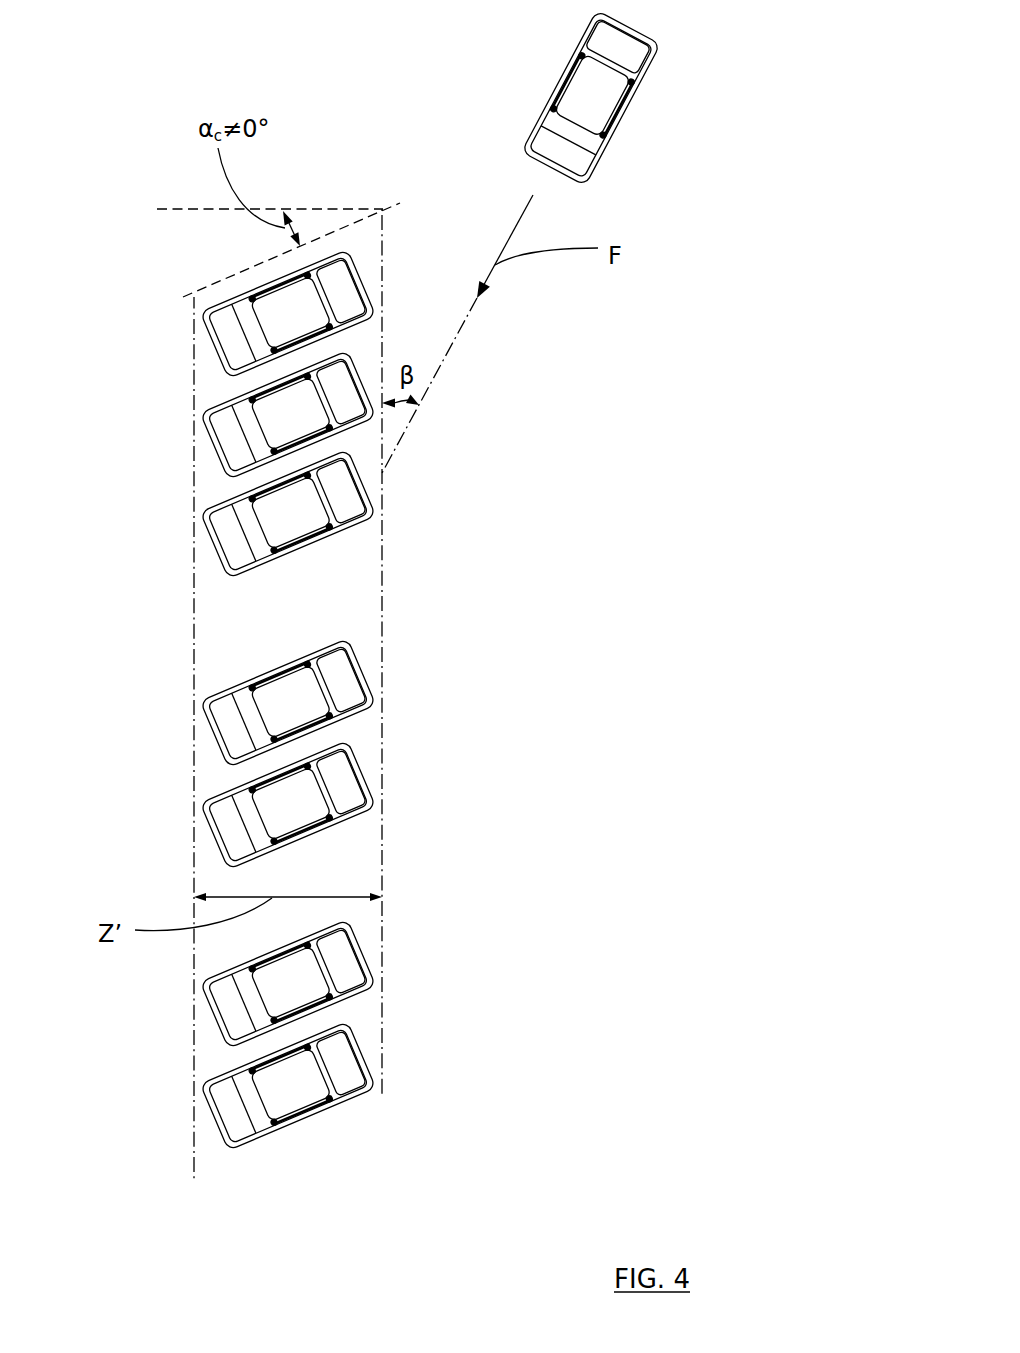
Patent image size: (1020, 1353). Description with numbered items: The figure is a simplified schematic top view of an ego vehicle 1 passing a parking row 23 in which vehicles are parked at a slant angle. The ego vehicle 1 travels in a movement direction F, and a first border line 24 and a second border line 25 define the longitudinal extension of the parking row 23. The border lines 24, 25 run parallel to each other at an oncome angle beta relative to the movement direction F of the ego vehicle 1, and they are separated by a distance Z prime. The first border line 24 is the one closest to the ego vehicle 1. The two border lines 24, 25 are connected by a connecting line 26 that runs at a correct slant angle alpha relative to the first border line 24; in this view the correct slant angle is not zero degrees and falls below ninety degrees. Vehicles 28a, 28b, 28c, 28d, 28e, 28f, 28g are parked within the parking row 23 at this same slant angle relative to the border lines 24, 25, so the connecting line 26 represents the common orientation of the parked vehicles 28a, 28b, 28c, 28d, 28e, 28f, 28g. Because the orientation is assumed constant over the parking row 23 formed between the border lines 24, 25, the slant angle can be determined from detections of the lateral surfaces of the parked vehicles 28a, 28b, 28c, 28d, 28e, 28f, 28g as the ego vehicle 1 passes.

The ego vehicle 1 is at (602, 95).
The parking row 23 is at (322, 1143).
The first border line 24 is at (382, 751).
The second border line 25 is at (194, 753).
The connecting line 26 is at (265, 257).
The vehicle 28a is at (266, 326).
The vehicle 28b is at (266, 427).
The vehicle 28c is at (266, 526).
The vehicle 28d is at (266, 715).
The vehicle 28e is at (266, 817).
The vehicle 28f is at (267, 996).
The vehicle 28g is at (266, 1098).